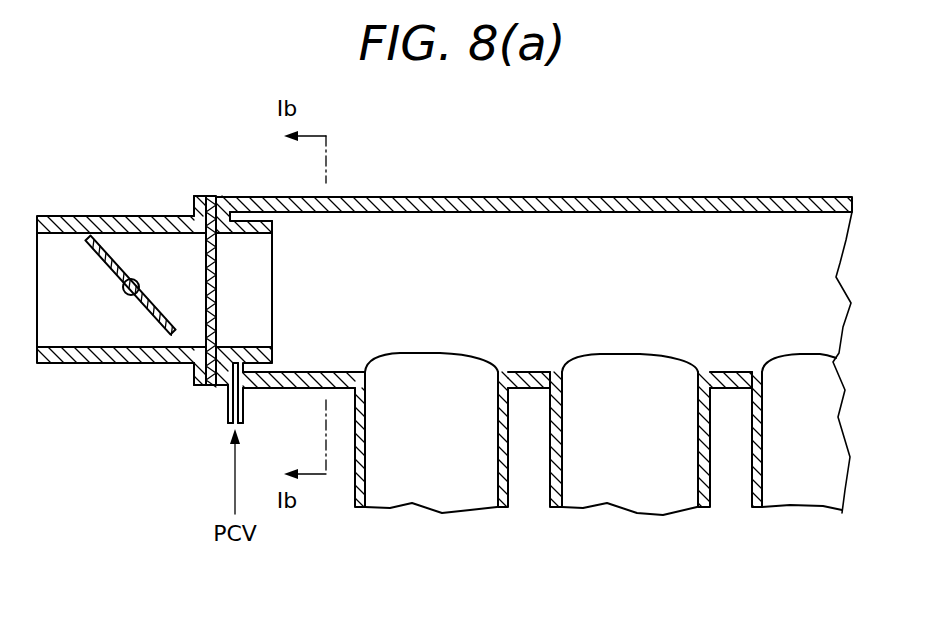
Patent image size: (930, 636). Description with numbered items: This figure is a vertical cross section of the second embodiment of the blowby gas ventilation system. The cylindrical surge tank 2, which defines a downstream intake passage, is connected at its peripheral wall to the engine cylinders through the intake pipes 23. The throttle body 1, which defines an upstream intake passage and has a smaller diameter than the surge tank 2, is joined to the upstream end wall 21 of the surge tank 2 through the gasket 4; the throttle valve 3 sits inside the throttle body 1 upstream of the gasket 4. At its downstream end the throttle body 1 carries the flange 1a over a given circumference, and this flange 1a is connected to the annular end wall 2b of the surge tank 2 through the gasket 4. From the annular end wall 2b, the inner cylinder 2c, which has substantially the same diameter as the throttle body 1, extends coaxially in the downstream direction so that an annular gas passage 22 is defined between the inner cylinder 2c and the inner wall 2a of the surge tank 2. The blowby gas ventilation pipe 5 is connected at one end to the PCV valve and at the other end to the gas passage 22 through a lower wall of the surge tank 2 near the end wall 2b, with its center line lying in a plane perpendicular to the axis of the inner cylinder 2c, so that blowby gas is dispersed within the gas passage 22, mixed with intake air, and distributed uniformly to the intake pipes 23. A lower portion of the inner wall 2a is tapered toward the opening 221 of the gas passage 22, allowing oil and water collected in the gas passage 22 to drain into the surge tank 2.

The throttle body 1 is at (67, 215).
The flange 1a is at (193, 381).
The surge tank 2 is at (530, 198).
The inner wall 2a is at (650, 212).
The annular end wall 2b is at (240, 196).
The inner cylinder 2c is at (290, 216).
The throttle valve 3 is at (134, 298).
The gasket 4 is at (212, 196).
The blowby gas ventilation pipe 5 is at (228, 414).
The upstream end wall 21 is at (212, 397).
The annular gas passage 22 is at (261, 212).
The opening of the gas passage 221 is at (270, 363).
The intake pipes 23 is at (511, 480).